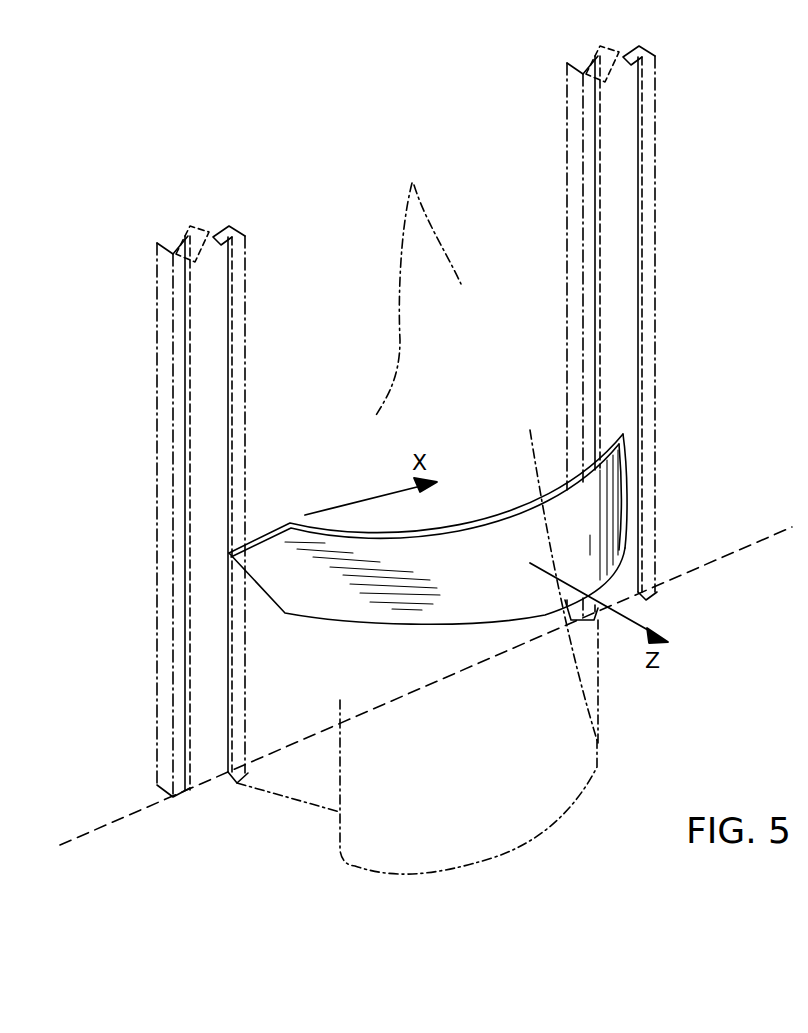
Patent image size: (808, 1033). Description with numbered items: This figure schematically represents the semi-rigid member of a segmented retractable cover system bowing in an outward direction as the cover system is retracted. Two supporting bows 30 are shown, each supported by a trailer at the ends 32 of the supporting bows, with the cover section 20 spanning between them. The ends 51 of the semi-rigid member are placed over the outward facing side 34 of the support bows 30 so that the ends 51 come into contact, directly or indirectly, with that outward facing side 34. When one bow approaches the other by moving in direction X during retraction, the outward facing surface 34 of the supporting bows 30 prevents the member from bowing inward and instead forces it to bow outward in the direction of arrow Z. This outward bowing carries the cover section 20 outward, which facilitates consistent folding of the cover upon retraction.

The cover section 20 is at (452, 776).
The supporting bow 30 is at (203, 748).
The ends of the supporting bows 32 is at (215, 757).
The outward facing side of the support bow 34 is at (226, 610).
The ends of the members 51 is at (270, 550).